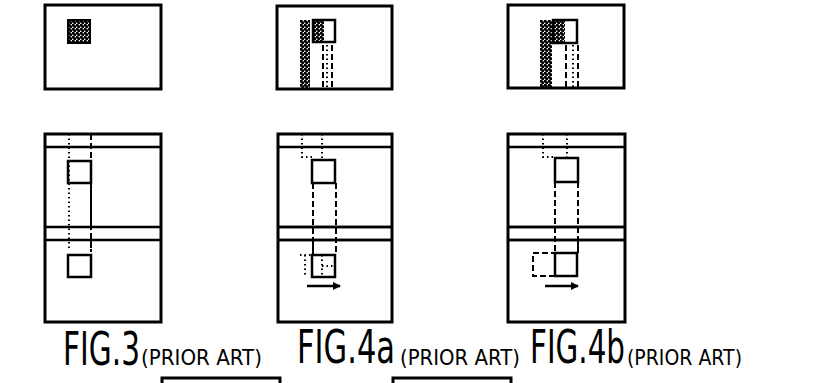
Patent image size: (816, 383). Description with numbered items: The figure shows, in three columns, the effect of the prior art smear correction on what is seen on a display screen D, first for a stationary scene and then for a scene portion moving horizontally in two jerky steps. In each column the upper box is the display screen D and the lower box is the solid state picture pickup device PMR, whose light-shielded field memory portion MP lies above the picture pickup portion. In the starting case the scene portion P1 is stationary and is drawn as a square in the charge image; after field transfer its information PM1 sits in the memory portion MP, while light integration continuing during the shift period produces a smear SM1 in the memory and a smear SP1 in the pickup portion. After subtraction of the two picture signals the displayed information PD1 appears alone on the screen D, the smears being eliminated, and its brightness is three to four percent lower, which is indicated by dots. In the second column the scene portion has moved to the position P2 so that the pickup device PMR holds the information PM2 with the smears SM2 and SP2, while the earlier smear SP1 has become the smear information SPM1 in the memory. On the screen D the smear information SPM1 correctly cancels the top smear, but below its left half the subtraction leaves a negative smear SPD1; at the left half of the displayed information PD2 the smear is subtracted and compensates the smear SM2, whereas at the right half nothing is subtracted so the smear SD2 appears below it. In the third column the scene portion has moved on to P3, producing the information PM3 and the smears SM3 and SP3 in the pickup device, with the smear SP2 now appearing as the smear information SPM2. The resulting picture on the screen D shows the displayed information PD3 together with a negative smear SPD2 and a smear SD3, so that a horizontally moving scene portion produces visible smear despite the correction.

In FIG. 3, the display screen D is at (150, 78).
In FIG. 4A, the display screen D is at (383, 80).
In FIG. 4B, the display screen D is at (614, 80).
In FIG. 3, the displayed information PD1 is at (90, 31).
In FIG. 4A, the displayed information PD2 is at (321, 20).
In FIG. 4B, the displayed information PD3 is at (563, 20).
In FIG. 4A, the smear SPD1 is at (305, 46).
In FIG. 4B, the smear SPD2 is at (546, 52).
In FIG. 4A, the smear SD2 is at (333, 60).
In FIG. 4B, the smear SD3 is at (571, 60).
In FIG. 4A, the field memory portion MP is at (392, 199).
In FIG. 4B, the field memory portion MP is at (625, 199).
In FIG. 3, the solid state picture pickup device PMR is at (207, 252).
In FIG. 4A, the solid state picture pickup device PMR is at (437, 252).
In FIG. 4B, the solid state picture pickup device PMR is at (668, 252).
In FIG. 3, the information PM1 is at (84, 172).
In FIG. 4A, the information PM2 is at (328, 172).
In FIG. 4B, the information PM3 is at (572, 172).
In FIG. 3, the smear information SPM1 is at (85, 154).
In FIG. 4A, the smear information SPM1 is at (320, 154).
In FIG. 4B, the smear information SPM2 is at (565, 153).
In FIG. 3, the smear SM1 is at (85, 210).
In FIG. 4A, the smear SM2 is at (330, 205).
In FIG. 4B, the smear SM3 is at (570, 205).
In FIG. 3, the scene portion P1 is at (85, 267).
In FIG. 4A, the scene portion P1 is at (305, 275).
In FIG. 4B, the scene portion P1 is at (535, 275).
In FIG. 4A, the scene portion P2 is at (335, 268).
In FIG. 4B, the scene portion P3 is at (575, 268).
In FIG. 3, the smear SP1 is at (85, 246).
In FIG. 4A, the smear SP2 is at (328, 246).
In FIG. 4B, the smear SP3 is at (572, 248).